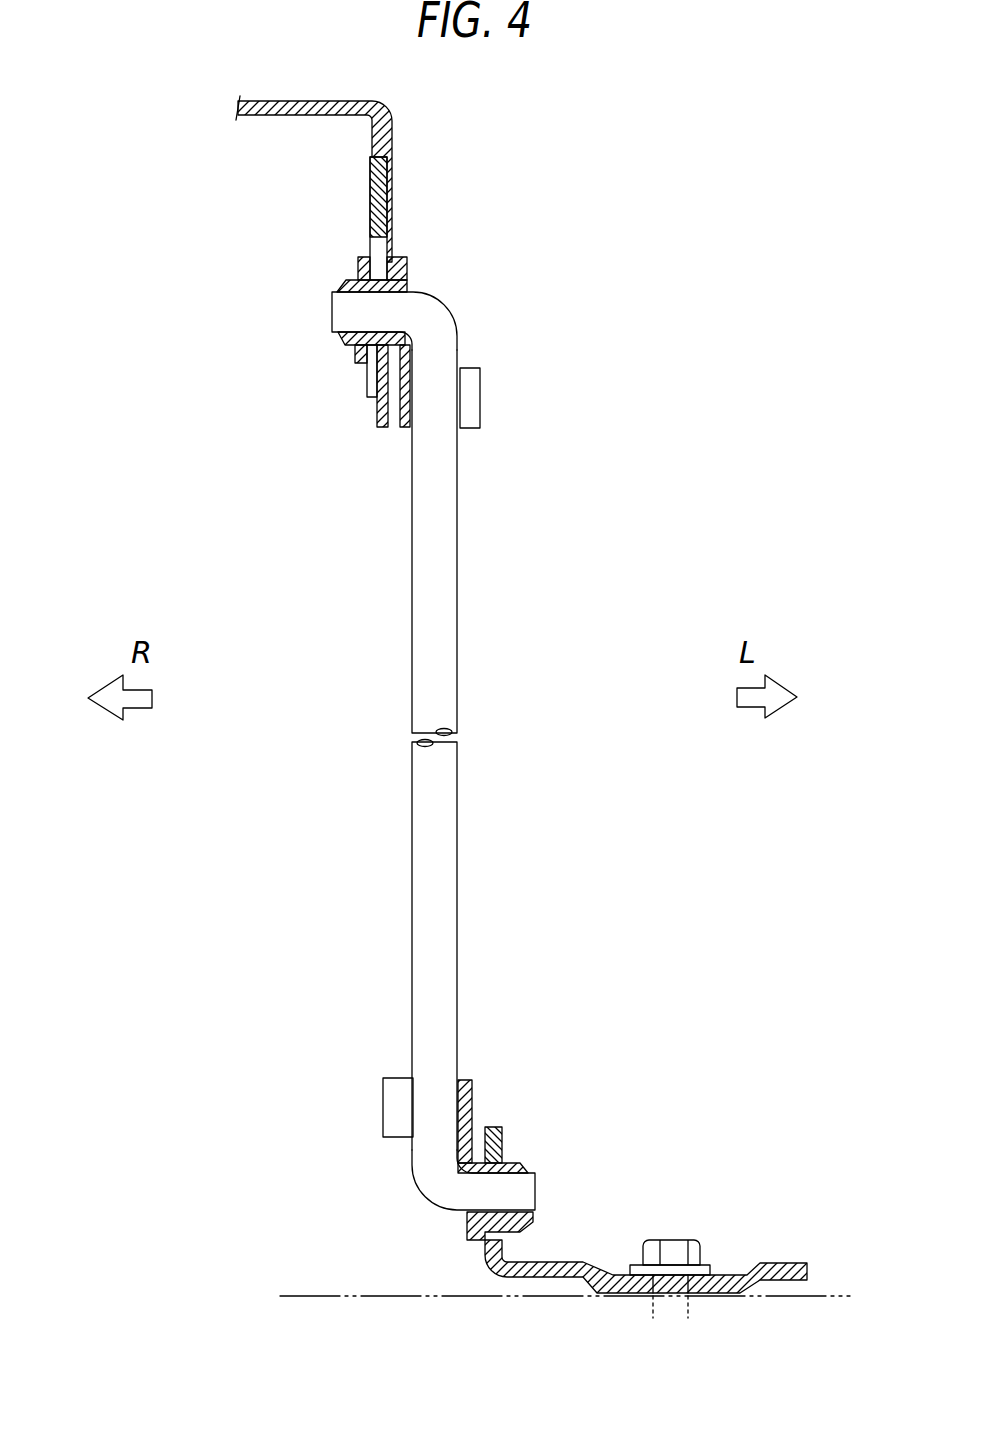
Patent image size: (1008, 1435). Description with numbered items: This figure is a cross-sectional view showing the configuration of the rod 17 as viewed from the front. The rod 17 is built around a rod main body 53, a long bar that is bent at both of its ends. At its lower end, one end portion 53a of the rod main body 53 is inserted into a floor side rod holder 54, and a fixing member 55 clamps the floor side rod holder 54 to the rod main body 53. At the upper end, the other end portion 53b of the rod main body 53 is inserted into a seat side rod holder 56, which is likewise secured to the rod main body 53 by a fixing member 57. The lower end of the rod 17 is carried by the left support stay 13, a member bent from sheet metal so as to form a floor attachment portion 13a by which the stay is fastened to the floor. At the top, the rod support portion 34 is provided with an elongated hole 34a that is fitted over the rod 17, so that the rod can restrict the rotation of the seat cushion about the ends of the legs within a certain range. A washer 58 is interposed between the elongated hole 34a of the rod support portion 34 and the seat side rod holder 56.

The left support stay 13 is at (793, 1237).
The floor attachment portion 13a is at (503, 1142).
The rod 17 is at (680, 441).
The rod support portion 34 is at (392, 137).
The elongated hole 34a is at (392, 245).
The rod main body 53 is at (482, 618).
The one end portion of the rod main body 53a is at (502, 1197).
The other end portion of the rod main body 53b is at (352, 318).
The floor side rod holder 54 is at (473, 1090).
The fixing member 55 is at (387, 1078).
The seat side rod holder 56 is at (408, 281).
The fixing member 57 is at (473, 368).
The washer 58 is at (357, 368).